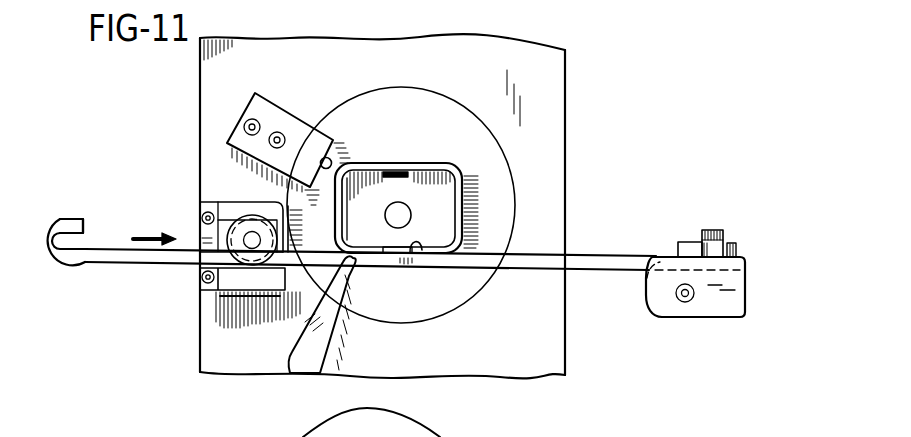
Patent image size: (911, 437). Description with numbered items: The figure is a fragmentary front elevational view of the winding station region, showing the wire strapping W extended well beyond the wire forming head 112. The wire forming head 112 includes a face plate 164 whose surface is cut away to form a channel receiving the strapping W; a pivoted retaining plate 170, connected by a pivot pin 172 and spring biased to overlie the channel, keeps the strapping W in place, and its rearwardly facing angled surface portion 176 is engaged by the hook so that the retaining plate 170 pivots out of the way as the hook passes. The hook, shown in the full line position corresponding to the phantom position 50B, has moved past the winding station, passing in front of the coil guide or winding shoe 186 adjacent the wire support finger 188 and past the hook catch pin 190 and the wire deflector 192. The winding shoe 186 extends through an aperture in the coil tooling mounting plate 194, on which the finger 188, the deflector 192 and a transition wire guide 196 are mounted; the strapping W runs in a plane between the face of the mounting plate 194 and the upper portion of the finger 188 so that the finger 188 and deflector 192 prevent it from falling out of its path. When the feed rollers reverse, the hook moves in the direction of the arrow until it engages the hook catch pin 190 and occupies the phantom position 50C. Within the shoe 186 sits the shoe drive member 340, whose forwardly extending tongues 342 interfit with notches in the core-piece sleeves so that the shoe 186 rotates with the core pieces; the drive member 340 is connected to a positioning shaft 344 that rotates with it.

The coil tooling mounting plate 194 is at (200, 72).
The transition wire guide 196 is at (323, 158).
The hook catch pin 190 is at (248, 236).
The phantom line position of hook 50C is at (230, 236).
The phantom line position of hook 50B is at (66, 221).
The wire strapping W is at (78, 264).
The wire deflector 192 is at (225, 292).
The coil guide or winding shoe 186 is at (377, 165).
The tongues 342 is at (396, 171).
The shoe drive member 340 is at (424, 190).
The positioning shaft 344 is at (408, 214).
The wire support finger 188 is at (335, 320).
The pivoted retaining plate 170 is at (686, 241).
The pivot pin 172 is at (712, 229).
The angled surface portion 176 is at (724, 244).
The face plate 164 is at (666, 305).
The wire forming head 112 is at (694, 274).